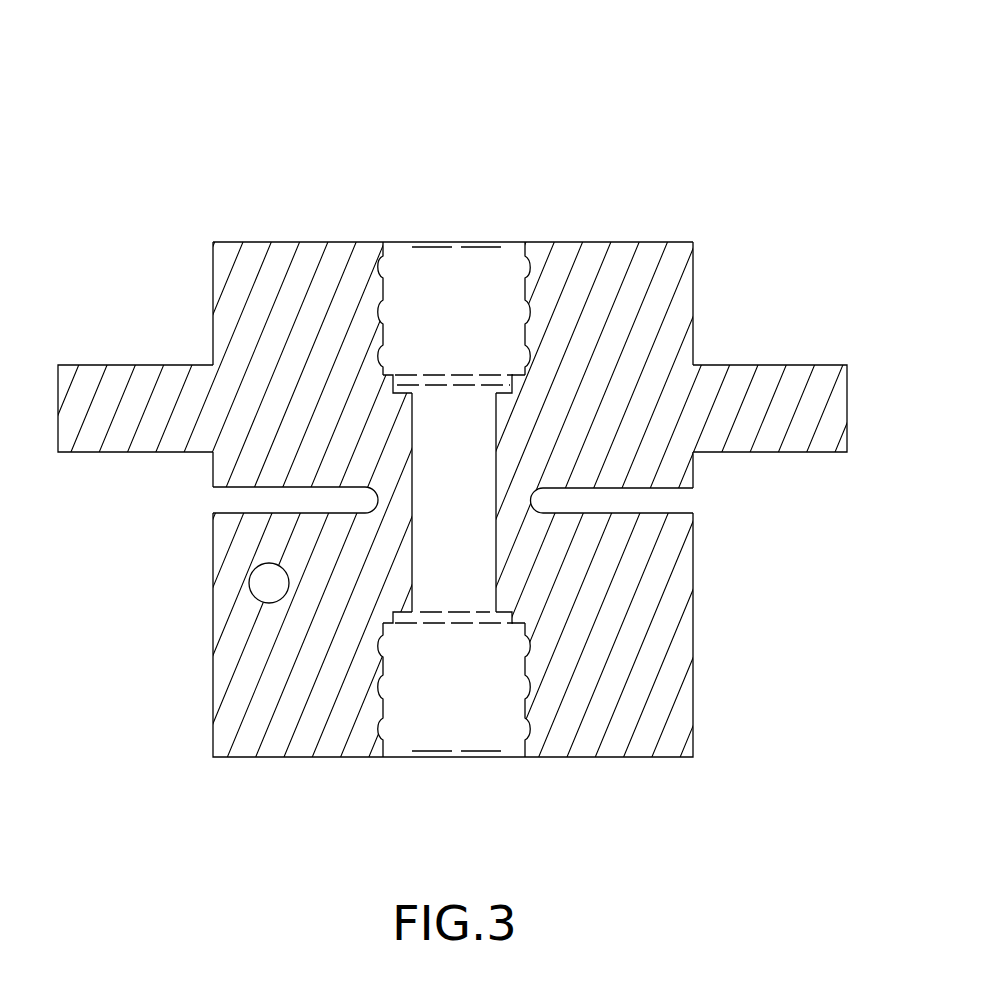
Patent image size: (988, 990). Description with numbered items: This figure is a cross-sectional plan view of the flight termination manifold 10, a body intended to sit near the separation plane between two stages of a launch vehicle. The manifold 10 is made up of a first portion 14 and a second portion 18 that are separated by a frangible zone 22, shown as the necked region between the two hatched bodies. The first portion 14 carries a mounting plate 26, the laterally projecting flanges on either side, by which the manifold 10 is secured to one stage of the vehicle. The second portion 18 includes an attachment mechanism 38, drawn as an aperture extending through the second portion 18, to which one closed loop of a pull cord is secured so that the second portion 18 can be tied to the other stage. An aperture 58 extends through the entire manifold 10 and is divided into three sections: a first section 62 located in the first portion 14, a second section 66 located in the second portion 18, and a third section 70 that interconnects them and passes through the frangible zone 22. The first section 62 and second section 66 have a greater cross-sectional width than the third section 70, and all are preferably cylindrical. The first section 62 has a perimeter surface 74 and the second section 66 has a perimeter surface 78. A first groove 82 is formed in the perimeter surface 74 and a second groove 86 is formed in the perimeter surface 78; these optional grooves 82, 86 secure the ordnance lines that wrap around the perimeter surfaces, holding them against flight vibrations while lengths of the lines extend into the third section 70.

The flight termination manifold 10 is at (176, 142).
The first portion 14 is at (877, 237).
The second portion 18 is at (777, 520).
The frangible zone 22 is at (372, 496).
The mounting plate 26 is at (78, 370).
The attachment mechanism 38 is at (270, 582).
The aperture 58 is at (468, 146).
The first section 62 is at (447, 273).
The second section 66 is at (453, 722).
The third section 70 is at (467, 463).
The perimeter surface 74 is at (394, 292).
The perimeter surface 78 is at (380, 708).
The first groove 82 is at (506, 268).
The second groove 86 is at (521, 705).